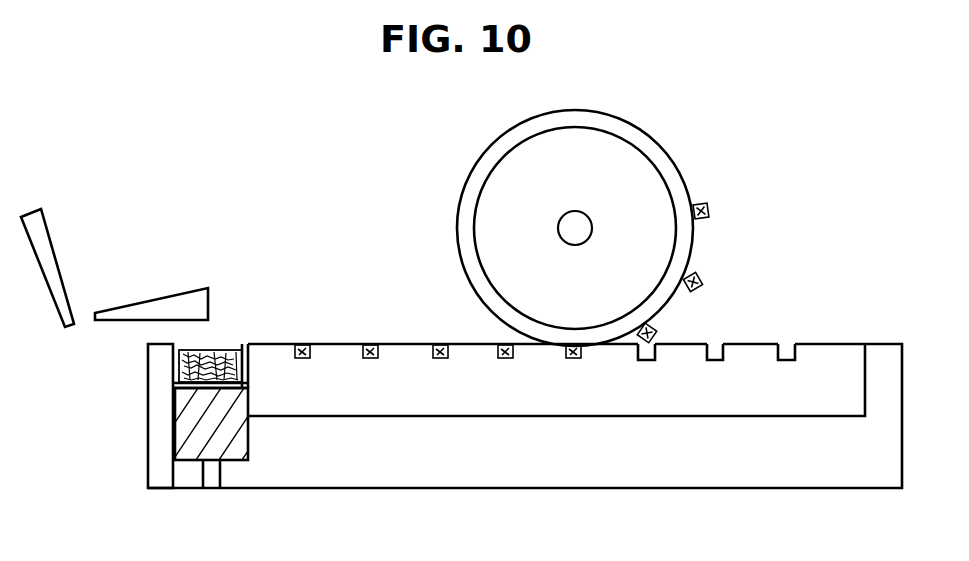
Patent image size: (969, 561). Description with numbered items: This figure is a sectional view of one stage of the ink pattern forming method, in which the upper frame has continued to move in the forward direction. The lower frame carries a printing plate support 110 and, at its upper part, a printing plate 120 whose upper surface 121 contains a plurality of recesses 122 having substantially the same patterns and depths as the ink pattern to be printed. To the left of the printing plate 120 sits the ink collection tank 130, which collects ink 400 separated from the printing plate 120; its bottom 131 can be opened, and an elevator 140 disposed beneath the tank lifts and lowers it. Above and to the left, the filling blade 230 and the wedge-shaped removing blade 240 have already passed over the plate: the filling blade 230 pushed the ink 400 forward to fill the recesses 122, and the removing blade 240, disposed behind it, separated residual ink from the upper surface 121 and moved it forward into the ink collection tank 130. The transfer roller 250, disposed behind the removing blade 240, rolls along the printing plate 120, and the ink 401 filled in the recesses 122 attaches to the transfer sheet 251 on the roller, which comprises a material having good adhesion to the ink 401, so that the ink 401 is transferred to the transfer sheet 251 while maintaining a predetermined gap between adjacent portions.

The printing plate support 110 is at (667, 445).
The printing plate 120 is at (542, 392).
The upper surface of the printing plate 121 is at (410, 343).
The recesses 122 is at (788, 345).
The ink collection tank 130 is at (177, 362).
The bottom of the ink collection tank 131 is at (175, 385).
The elevator 140 is at (238, 443).
The filling blade 230 is at (46, 246).
The removing blade 240 is at (183, 302).
The transfer roller 250 is at (512, 181).
The transfer sheet 251 is at (660, 157).
The ink 400 is at (220, 344).
The ink filled in the recesses 401 is at (708, 207).